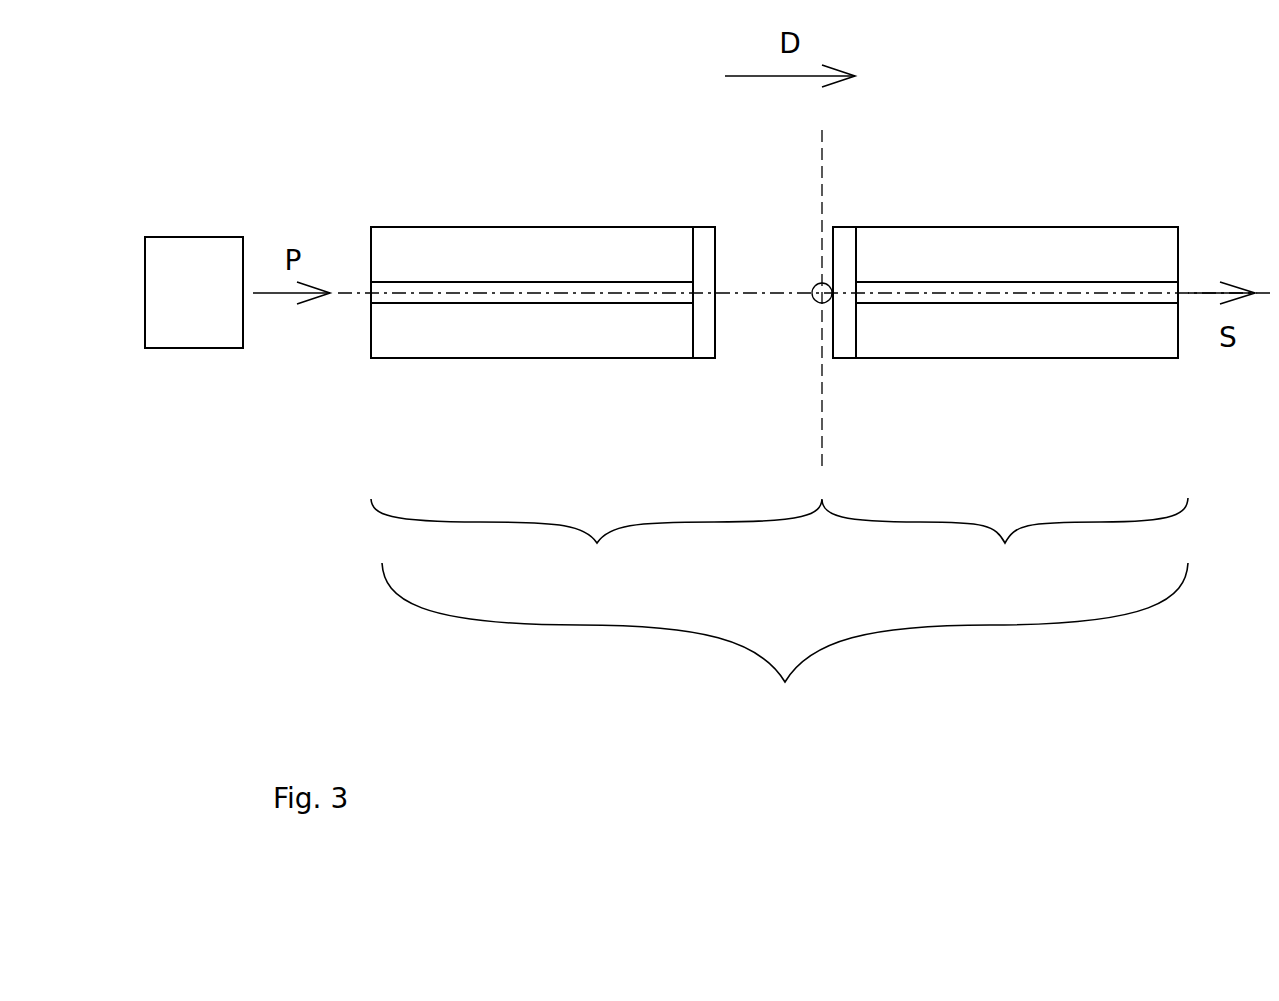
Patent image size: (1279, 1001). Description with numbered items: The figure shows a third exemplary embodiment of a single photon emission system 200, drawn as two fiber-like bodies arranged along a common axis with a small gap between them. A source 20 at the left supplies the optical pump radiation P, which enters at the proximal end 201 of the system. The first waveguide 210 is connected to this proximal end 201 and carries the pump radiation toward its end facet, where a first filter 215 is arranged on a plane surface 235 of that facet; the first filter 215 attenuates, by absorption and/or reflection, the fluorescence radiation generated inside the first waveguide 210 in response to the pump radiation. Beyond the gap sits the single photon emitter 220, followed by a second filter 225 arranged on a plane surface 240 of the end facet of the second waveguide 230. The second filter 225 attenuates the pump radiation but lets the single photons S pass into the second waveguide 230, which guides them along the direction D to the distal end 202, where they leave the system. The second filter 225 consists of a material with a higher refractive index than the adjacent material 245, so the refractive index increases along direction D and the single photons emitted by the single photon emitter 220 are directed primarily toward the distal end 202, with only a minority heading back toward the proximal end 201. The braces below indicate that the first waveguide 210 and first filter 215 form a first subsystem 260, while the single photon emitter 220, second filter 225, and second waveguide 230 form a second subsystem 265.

The pump light source 20 is at (194, 292).
The single photon emission system 200 is at (785, 644).
The proximal end 201 is at (371, 290).
The distal end 202 is at (1178, 287).
The first waveguide 210 is at (487, 335).
The first filter 215 is at (705, 347).
The single photon emitter 220 is at (820, 302).
The second filter 225 is at (843, 240).
The second waveguide 230 is at (1027, 335).
The plane surface 235 is at (623, 247).
The plane surface 240 is at (903, 352).
The adjacent material 245 is at (812, 248).
The first subsystem 260 is at (596, 547).
The second subsystem 265 is at (1005, 541).